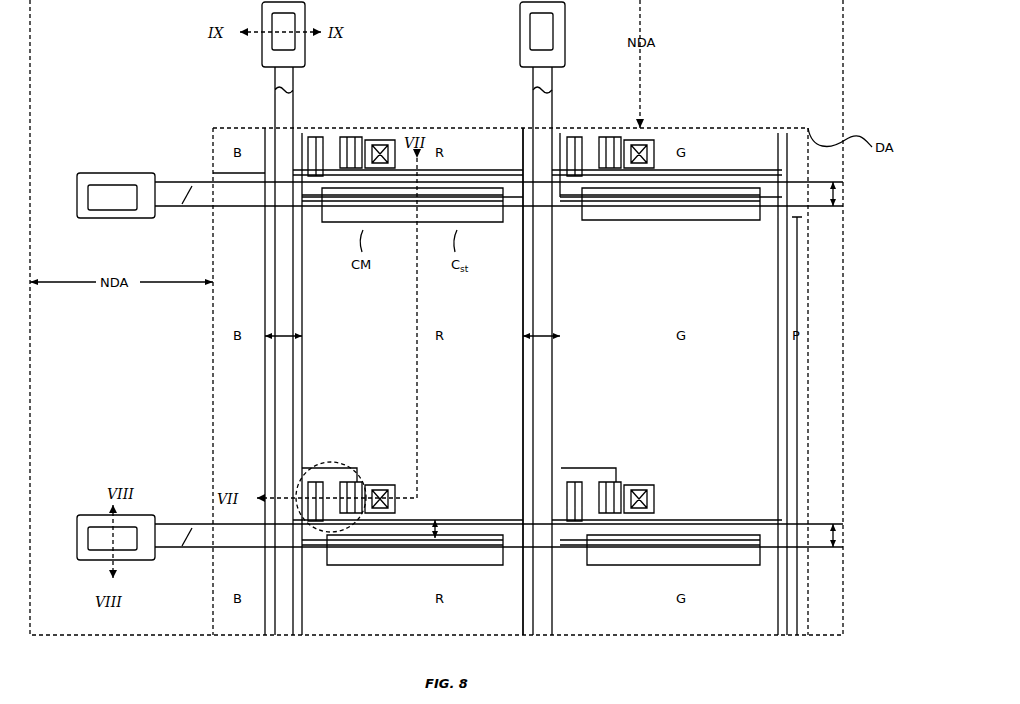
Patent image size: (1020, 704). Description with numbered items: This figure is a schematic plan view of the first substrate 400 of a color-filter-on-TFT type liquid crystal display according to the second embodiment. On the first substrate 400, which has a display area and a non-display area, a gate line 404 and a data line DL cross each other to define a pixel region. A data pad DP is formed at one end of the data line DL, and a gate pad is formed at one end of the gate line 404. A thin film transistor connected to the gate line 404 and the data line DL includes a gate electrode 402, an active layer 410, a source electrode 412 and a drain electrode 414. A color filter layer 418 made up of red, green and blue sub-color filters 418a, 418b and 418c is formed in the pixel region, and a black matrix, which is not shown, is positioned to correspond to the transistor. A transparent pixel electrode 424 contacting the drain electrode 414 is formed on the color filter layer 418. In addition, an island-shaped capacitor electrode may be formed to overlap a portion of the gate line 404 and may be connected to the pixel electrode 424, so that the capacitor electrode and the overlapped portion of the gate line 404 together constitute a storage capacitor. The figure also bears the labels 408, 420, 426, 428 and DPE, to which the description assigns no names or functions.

The first substrate 400 is at (843, 291).
The gate electrode 402 is at (347, 479).
The gate line 404 is at (836, 195).
The gate pad 408 is at (134, 543).
The active layer 410 is at (327, 537).
The source electrode 412 is at (310, 468).
The drain electrode 414 is at (384, 478).
The color filter layer 418 is at (433, 350).
The red sub-color filter 418a is at (460, 129).
The green sub-color filter 418b is at (724, 129).
The blue sub-color filter 418c is at (222, 380).
The gap width 420 is at (412, 428).
The transparent pixel electrode 424 is at (266, 243).
The gate pad contact 426 is at (151, 562).
The shielding electrode 428 is at (303, 353).
The data line DL is at (266, 464).
The data pad DP is at (305, 14).
The data pad electrode DPE is at (305, 66).